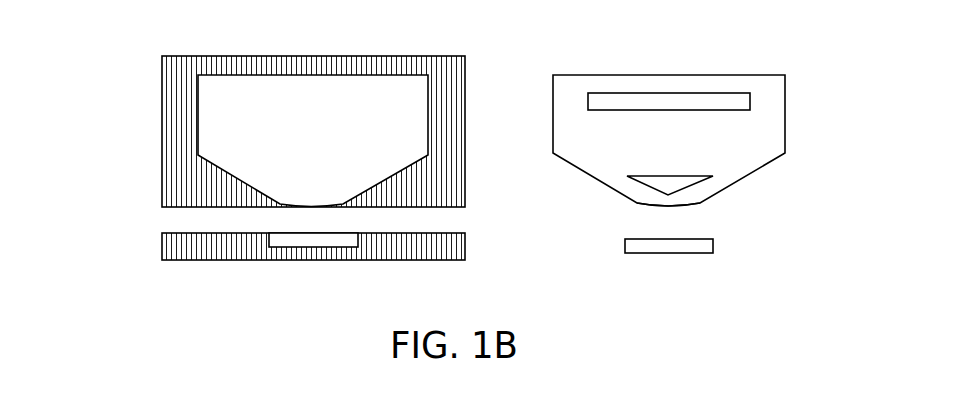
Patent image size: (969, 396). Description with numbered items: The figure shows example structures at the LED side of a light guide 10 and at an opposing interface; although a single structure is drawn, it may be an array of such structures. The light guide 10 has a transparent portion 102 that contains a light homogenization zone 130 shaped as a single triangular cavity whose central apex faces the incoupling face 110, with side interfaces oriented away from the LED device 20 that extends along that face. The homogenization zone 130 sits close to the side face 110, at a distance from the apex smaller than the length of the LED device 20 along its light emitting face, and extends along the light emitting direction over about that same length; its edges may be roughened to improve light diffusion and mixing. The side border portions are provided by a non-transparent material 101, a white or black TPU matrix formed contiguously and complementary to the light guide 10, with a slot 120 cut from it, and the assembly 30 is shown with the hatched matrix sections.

The light guide 10 is at (779, 202).
The LED device 20 is at (672, 245).
The mold 30 is at (136, 80).
The non-transparent material 101 is at (405, 200).
The transparent portion 102 is at (575, 152).
The incoupling face 110 is at (650, 205).
The slot 120 is at (663, 100).
The light homogenization zone 130 is at (677, 183).